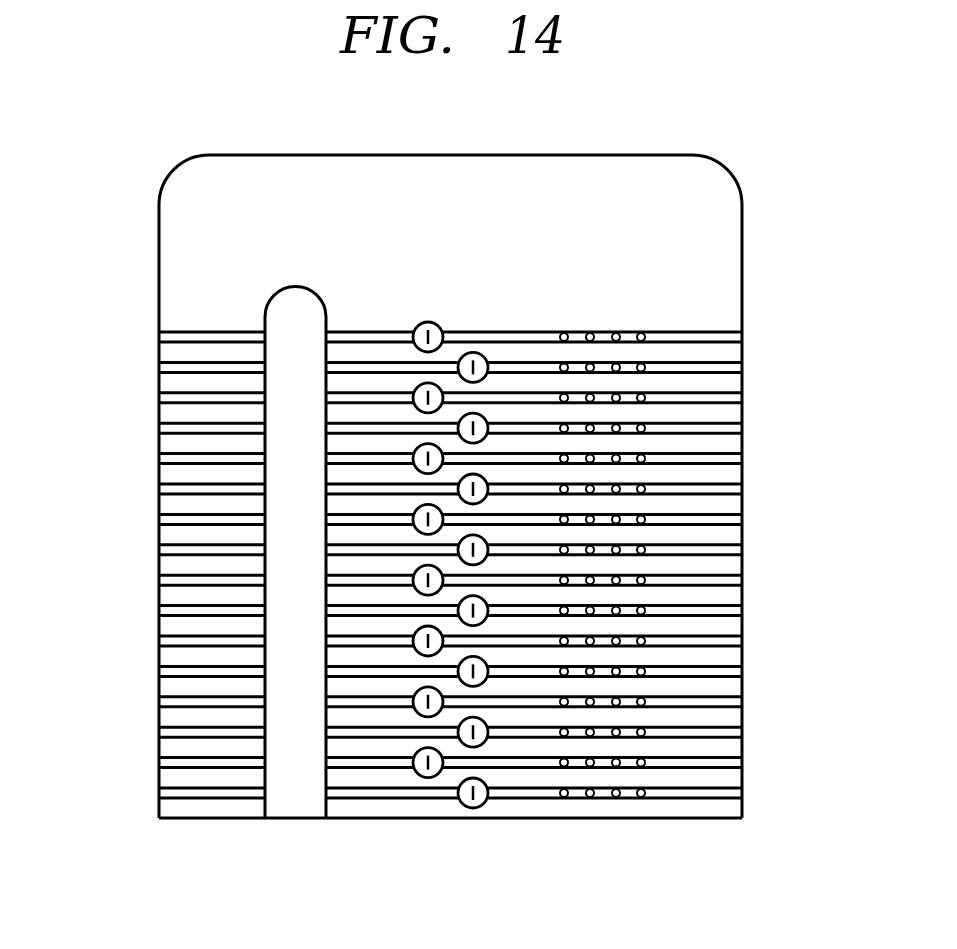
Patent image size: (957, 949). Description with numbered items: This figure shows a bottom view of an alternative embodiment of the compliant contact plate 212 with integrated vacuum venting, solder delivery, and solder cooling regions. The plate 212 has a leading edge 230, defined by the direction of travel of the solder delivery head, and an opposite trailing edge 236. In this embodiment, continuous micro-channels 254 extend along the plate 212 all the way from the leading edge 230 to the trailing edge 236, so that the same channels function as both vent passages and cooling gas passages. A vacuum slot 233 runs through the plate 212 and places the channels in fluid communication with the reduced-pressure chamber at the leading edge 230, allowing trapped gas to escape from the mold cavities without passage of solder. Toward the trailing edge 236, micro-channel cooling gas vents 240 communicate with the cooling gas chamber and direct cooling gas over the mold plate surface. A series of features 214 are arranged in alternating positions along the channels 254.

The compliant contact plate 212 is at (745, 232).
The cells 214 is at (474, 862).
The leading edge 230 is at (159, 272).
The vacuum slot 233 is at (293, 820).
The trailing edge 236 is at (747, 290).
The micro-channel cooling gas vents 240 is at (641, 330).
The continuous micro-channels 254 is at (159, 517).